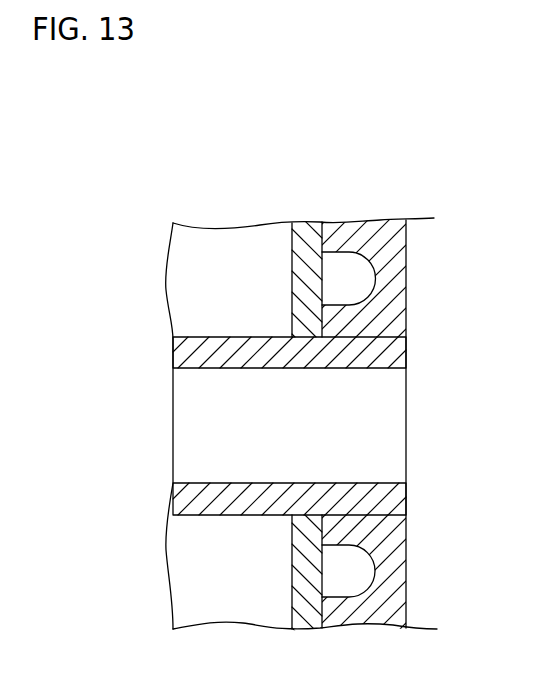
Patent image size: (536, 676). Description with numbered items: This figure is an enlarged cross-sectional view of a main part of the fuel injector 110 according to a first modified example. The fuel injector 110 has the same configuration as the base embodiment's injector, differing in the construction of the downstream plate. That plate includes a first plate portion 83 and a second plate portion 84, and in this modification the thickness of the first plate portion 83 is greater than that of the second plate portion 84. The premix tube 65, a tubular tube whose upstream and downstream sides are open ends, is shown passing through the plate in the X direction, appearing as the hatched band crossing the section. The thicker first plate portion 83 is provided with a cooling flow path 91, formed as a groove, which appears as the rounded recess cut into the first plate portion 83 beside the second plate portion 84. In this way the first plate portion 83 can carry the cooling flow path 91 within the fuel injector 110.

The fuel injector 110 is at (161, 113).
The premix tube 65 is at (163, 353).
The second plate portion 84 is at (303, 245).
The first plate portion 83 is at (406, 302).
The cooling flow path 91 is at (344, 273).